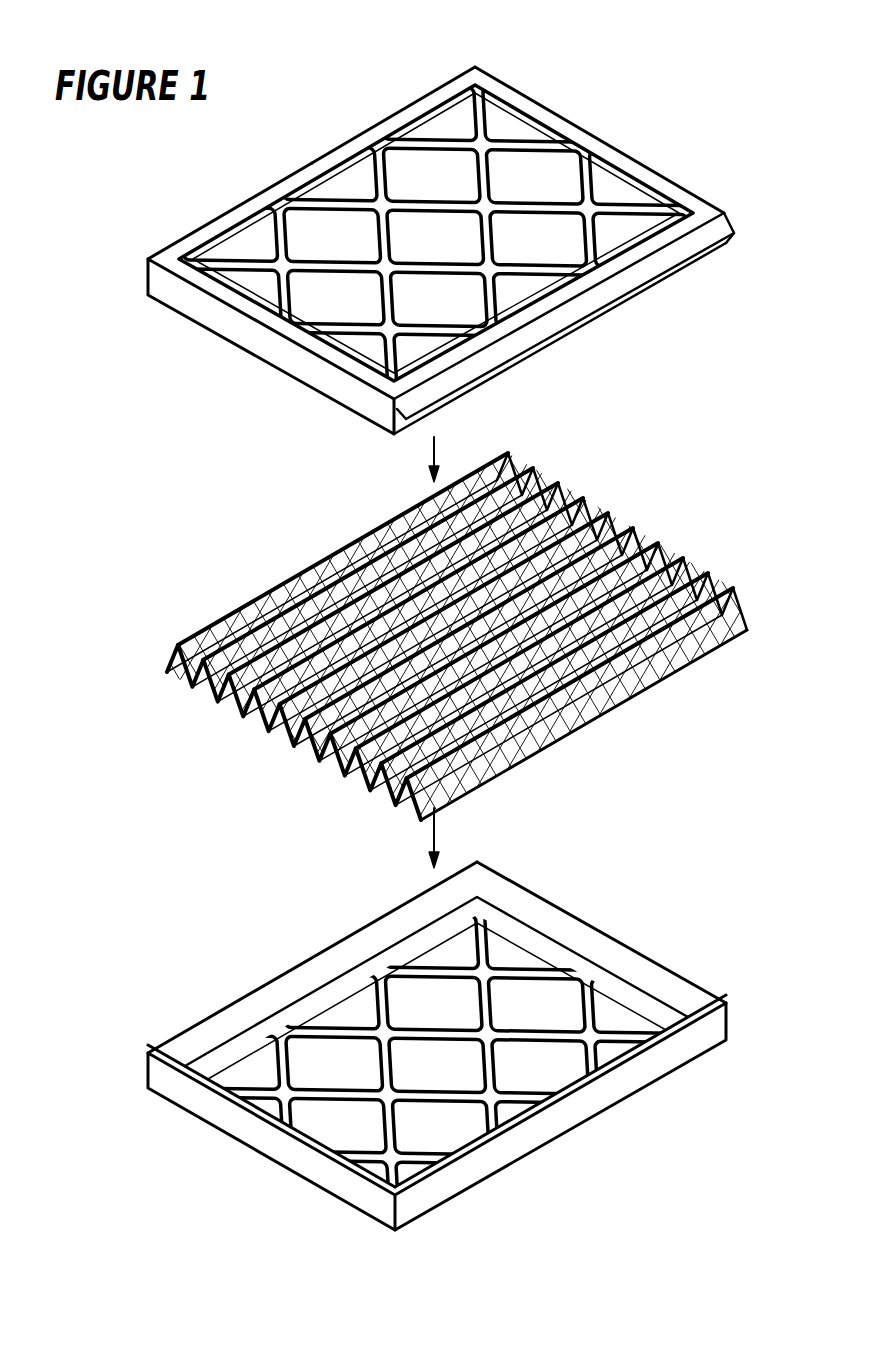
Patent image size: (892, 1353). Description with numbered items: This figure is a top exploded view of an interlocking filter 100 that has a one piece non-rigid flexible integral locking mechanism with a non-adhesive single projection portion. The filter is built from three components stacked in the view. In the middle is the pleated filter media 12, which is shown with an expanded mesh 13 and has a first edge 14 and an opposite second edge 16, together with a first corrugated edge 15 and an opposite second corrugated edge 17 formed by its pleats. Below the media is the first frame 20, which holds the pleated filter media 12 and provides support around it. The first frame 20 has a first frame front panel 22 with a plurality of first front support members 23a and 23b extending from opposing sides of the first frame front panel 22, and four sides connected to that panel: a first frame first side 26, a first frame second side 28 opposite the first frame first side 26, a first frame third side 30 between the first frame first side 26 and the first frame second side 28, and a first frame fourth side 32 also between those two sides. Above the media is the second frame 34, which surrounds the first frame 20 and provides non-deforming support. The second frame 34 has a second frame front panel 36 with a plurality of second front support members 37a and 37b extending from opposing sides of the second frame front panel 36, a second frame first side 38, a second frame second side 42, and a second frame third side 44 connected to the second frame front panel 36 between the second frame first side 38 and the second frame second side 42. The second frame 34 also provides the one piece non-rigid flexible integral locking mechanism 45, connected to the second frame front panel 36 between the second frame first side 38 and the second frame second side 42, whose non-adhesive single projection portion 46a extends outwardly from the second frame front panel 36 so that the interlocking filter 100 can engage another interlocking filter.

The interlocking filter 100 is at (283, 124).
The second frame 34 is at (462, 255).
The second frame front panel 36 is at (418, 112).
The second frame second side 42 is at (607, 122).
The second frame third side 44 is at (252, 193).
The second frame first side 38 is at (258, 348).
The one piece non-rigid flexible integral locking mechanism 45 is at (590, 320).
The non-adhesive single projection portion 46a is at (726, 222).
The second front support member 37a is at (441, 206).
The second front support member 37b is at (449, 266).
The pleated filter media 12 is at (458, 636).
The expanded mesh 13 is at (710, 648).
The first edge 14 is at (612, 706).
The first corrugated edge 15 is at (262, 728).
The second edge 16 is at (330, 560).
The second corrugated edge 17 is at (612, 520).
The first frame 20 is at (437, 1048).
The first frame front panel 22 is at (404, 945).
The first frame fourth side 32 is at (332, 942).
The first frame first side 26 is at (608, 912).
The first frame second side 28 is at (258, 1140).
The first frame third side 30 is at (594, 1100).
The first front support member 23a is at (447, 1030).
The first front support member 23b is at (451, 1090).